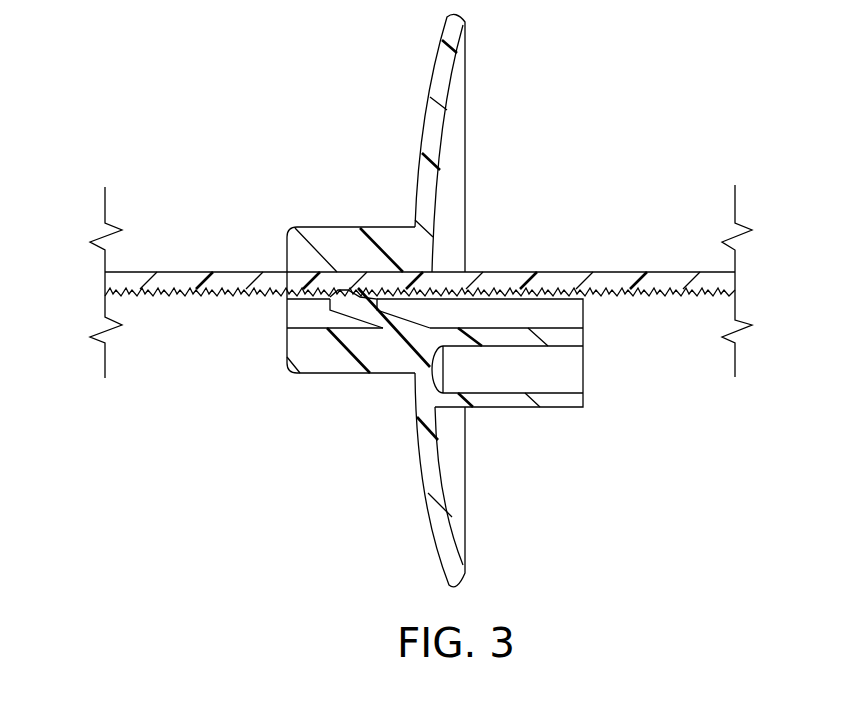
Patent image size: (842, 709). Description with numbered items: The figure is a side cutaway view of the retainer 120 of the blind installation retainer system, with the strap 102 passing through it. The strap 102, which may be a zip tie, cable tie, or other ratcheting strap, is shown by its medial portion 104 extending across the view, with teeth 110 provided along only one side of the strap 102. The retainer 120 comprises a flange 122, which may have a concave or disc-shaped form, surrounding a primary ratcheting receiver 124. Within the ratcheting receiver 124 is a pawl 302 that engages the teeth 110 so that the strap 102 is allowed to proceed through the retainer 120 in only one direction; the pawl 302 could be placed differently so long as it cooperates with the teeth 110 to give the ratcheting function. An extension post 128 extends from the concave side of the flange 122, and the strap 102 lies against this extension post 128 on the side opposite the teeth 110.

The strap 102 is at (178, 266).
The medial portion 104 is at (630, 271).
The teeth 110 is at (660, 297).
The retainer 120 is at (430, 53).
The flange 122 is at (433, 521).
The ratcheting receiver 124 is at (268, 311).
The extension post 128 is at (560, 407).
The pawl 302 is at (330, 304).